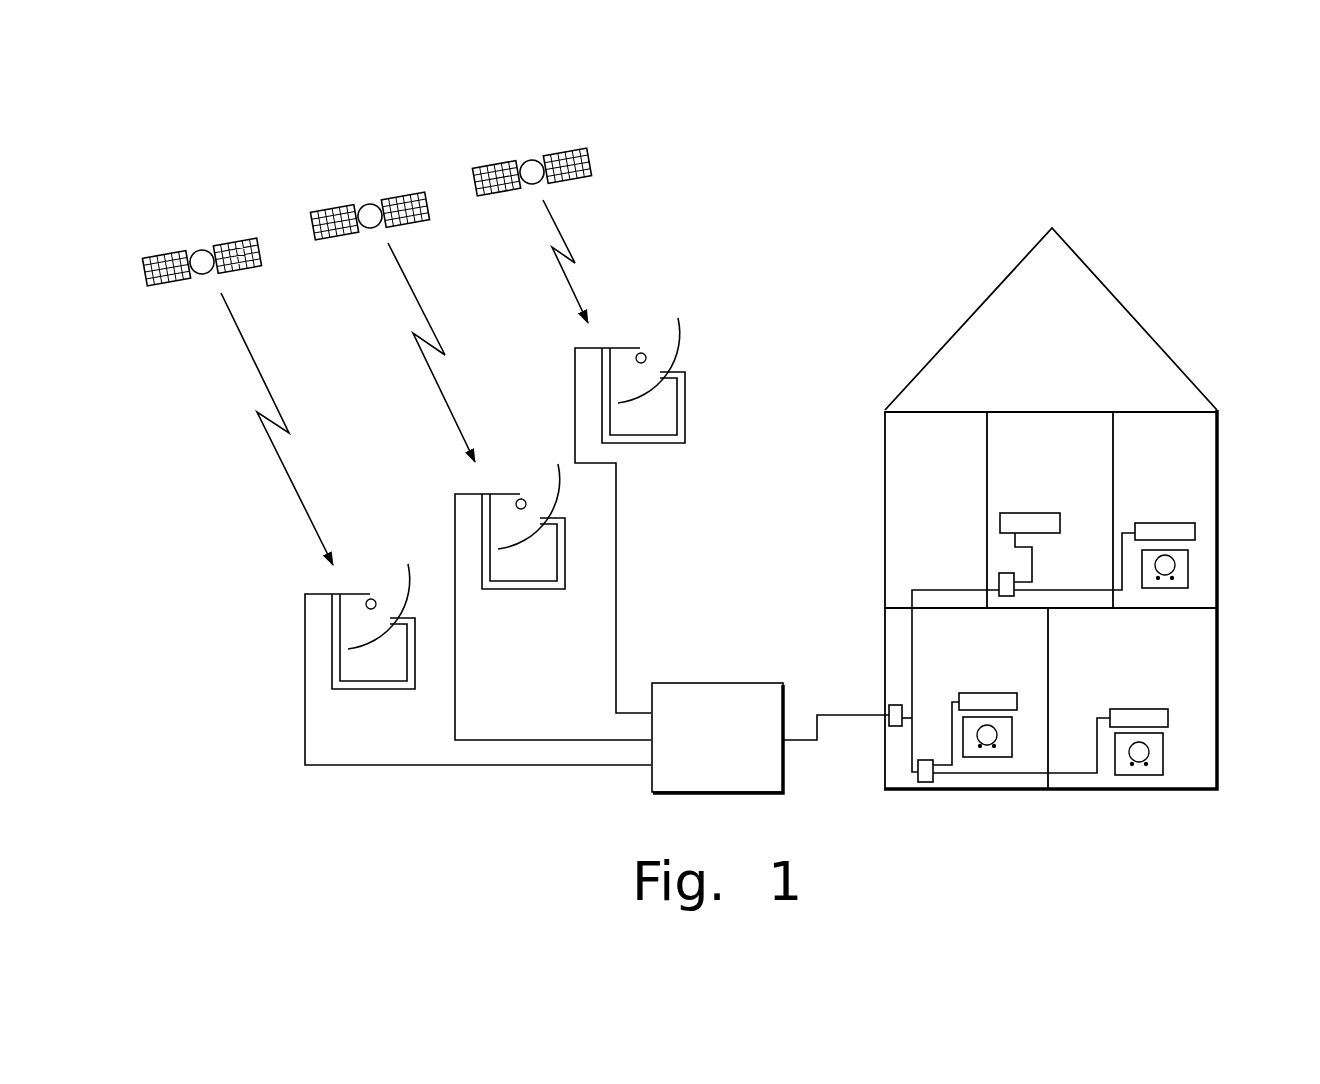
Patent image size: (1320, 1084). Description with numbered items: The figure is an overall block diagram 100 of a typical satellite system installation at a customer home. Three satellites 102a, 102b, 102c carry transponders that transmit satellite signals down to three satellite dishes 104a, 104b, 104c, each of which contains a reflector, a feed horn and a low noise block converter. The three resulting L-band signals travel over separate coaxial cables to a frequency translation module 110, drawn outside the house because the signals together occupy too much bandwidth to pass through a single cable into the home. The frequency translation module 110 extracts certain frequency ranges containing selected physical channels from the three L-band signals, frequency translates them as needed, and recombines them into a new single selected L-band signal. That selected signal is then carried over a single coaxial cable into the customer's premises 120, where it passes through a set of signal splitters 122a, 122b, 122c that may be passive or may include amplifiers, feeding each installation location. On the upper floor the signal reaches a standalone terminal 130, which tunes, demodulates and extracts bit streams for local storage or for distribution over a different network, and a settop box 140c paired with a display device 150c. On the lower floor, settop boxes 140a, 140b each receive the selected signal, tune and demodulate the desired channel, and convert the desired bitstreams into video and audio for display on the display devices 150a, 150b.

The overall block diagram 100 is at (1230, 238).
The satellite 102a is at (590, 161).
The satellite 102b is at (367, 204).
The satellite 102c is at (199, 249).
The satellite dish 104a is at (652, 393).
The satellite dish 104b is at (532, 539).
The satellite dish 104c is at (382, 639).
The frequency translation module 110 is at (721, 676).
The customer's premises 120 is at (922, 312).
The signal splitter 122a is at (895, 698).
The signal splitter 122b is at (922, 796).
The signal splitter 122c is at (996, 581).
The standalone terminal 130 is at (1023, 501).
The settop box 140a is at (985, 691).
The settop box 140b is at (1135, 706).
The settop box 140c is at (1147, 516).
The display device 150a is at (1020, 731).
The display device 150b is at (1171, 753).
The display device 150c is at (1199, 561).